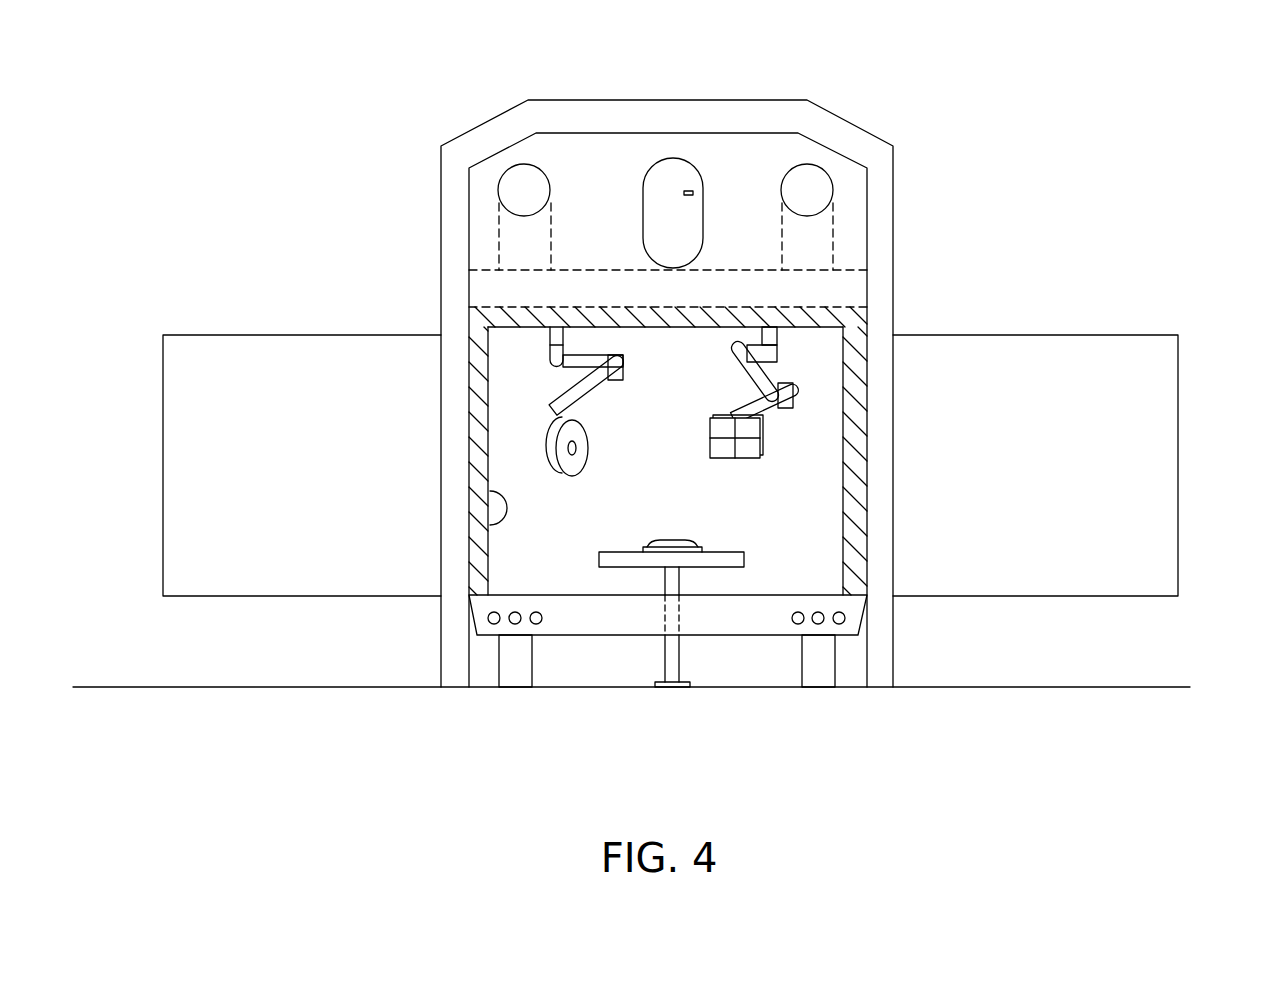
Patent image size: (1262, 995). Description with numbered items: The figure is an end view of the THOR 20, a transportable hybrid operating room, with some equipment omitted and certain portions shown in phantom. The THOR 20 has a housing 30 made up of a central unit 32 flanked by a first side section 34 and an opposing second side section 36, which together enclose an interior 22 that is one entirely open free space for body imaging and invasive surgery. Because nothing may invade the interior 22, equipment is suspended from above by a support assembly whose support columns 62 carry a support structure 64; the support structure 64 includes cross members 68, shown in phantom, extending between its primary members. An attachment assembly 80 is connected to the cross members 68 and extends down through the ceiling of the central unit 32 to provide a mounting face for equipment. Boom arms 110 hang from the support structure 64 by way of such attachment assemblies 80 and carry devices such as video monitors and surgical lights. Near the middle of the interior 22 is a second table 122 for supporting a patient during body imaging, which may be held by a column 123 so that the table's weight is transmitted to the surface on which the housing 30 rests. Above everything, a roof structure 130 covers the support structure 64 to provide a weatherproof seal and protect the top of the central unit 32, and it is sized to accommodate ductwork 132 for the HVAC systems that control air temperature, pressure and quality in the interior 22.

The THOR 20 is at (406, 74).
The interior 22 is at (497, 523).
The housing 30 is at (364, 624).
The central unit 32 is at (695, 625).
The first side section 34 is at (163, 472).
The second side section 36 is at (1178, 480).
The support columns 62 is at (875, 362).
The support structure 64 is at (512, 322).
The cross members 68 is at (847, 287).
The attachment assembly 80 is at (580, 313).
The boom arms 110 is at (583, 362).
The second table 122 is at (720, 558).
The column 123 is at (660, 615).
The roof structure 130 is at (845, 132).
The ductwork 132 is at (840, 237).